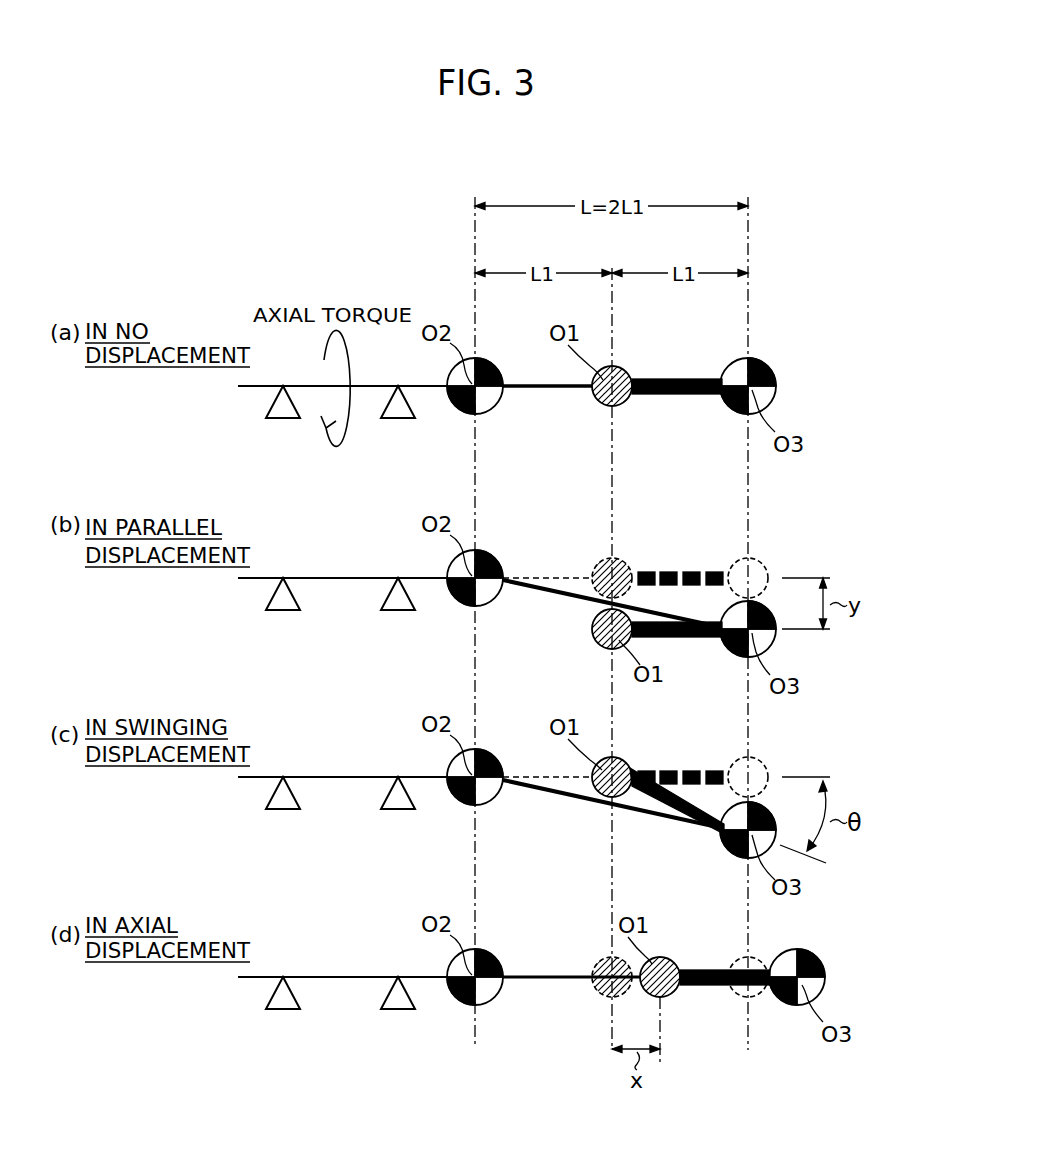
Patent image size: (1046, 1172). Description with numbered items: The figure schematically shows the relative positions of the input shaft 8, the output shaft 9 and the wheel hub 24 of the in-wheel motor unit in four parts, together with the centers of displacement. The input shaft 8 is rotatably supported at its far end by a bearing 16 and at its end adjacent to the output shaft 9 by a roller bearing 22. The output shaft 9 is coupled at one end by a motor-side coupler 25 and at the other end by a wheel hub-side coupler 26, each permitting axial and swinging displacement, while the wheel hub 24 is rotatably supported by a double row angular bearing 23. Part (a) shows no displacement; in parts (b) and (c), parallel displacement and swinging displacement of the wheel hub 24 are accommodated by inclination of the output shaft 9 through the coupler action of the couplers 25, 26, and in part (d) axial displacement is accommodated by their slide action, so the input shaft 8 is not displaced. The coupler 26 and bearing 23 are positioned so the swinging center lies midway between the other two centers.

The input shaft 8 is at (373, 384).
The output shaft 9 is at (533, 390).
The bearing 16 is at (283, 420).
The roller bearing 22 is at (398, 420).
The double row angular bearing 23 is at (628, 374).
The wheel hub 24 is at (675, 398).
The motor-side coupler 25 is at (490, 368).
The wheel hub-side coupler 26 is at (765, 366).